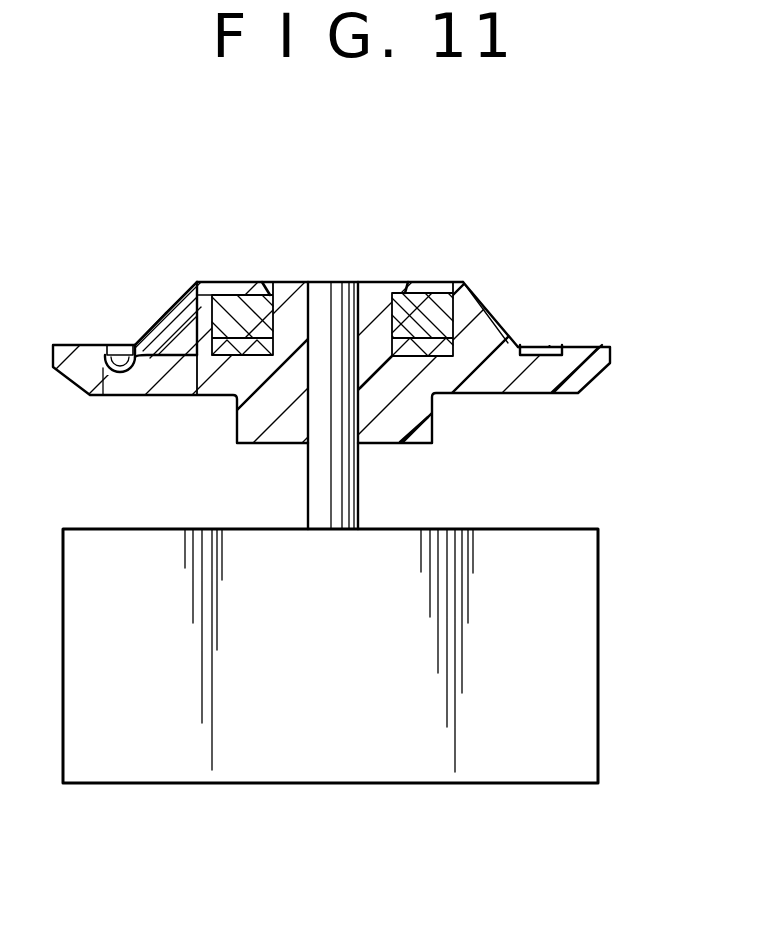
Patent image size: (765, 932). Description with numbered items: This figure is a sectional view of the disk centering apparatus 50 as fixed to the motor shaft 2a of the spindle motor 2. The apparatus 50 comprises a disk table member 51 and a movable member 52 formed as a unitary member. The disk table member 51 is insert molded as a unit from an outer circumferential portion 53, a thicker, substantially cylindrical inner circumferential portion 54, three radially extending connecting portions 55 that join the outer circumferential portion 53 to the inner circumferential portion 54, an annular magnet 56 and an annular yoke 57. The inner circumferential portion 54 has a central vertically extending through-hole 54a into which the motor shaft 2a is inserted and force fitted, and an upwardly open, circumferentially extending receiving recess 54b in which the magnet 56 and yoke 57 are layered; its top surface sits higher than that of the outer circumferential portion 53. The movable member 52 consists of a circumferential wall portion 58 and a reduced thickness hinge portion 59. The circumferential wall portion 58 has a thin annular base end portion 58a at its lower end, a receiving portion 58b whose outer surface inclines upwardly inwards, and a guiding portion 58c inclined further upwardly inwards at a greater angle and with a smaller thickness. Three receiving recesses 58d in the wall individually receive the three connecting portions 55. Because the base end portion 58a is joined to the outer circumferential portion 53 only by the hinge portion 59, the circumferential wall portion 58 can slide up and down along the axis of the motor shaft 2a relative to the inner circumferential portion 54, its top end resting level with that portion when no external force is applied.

The spindle motor 2 is at (600, 643).
The motor shaft 2a is at (358, 491).
The disk centering apparatus 50 is at (607, 242).
The disk table member 51 is at (612, 355).
The movable member 52 is at (135, 332).
The outer circumferential portion 53 is at (590, 345).
The inner circumferential portion 54 is at (380, 290).
The through-hole 54a is at (309, 323).
The receiving recess 54b is at (442, 297).
The connecting portions 55 is at (481, 327).
The magnet 56 is at (230, 307).
The yoke 57 is at (253, 278).
The circumferential wall portion 58 is at (160, 322).
The base end portion 58a is at (175, 357).
The receiving portion 58b is at (152, 318).
The guiding portion 58c is at (182, 288).
The receiving recesses 58d is at (482, 292).
The reduced thickness hinge portion 59 is at (122, 378).